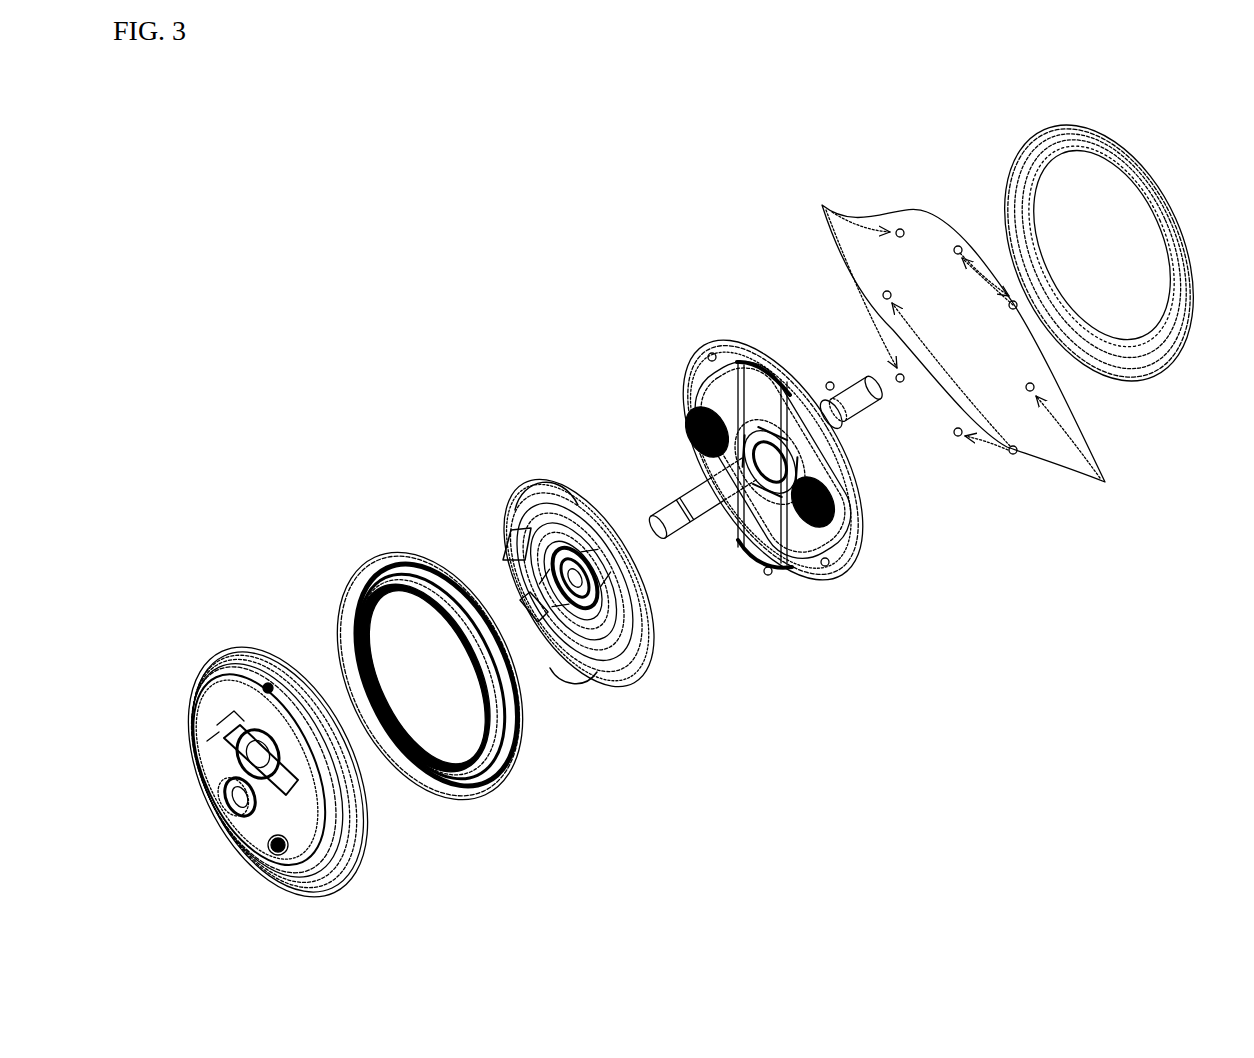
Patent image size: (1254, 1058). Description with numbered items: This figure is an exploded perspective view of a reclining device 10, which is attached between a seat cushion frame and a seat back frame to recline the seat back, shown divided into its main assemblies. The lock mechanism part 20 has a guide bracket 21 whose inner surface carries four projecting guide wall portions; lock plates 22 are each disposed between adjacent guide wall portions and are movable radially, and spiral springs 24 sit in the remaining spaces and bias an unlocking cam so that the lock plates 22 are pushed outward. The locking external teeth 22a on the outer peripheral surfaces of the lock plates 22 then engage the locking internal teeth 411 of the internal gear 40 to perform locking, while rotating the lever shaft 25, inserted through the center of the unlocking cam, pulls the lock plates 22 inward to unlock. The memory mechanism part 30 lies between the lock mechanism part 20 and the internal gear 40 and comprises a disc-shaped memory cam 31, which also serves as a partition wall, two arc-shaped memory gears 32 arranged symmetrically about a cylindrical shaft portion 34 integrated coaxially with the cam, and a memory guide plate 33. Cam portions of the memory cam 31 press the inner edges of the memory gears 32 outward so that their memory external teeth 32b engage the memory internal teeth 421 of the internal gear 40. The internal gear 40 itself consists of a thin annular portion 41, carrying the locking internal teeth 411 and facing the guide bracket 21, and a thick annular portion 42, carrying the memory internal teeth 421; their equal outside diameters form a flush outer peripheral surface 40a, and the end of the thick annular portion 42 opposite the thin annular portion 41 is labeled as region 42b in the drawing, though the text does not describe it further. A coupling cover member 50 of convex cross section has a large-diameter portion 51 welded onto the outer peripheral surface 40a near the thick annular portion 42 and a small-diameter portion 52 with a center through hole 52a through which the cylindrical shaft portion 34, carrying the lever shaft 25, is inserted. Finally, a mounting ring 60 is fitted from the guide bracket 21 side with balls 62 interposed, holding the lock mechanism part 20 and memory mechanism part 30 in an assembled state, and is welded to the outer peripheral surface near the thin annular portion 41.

The reclining device 10 is at (918, 718).
The lock mechanism part 20 is at (850, 575).
The guide bracket 21 is at (742, 345).
The lock plate 22 is at (778, 382).
The locking external teeth 22a is at (757, 366).
The spiral spring 24 is at (690, 428).
The lever shaft 25 is at (668, 540).
The memory mechanism part 30 is at (662, 688).
The memory cam 31 is at (598, 455).
The memory gear 32 is at (590, 515).
The memory external teeth 32b is at (545, 490).
The memory guide plate 33 is at (510, 510).
The cylindrical shaft portion 34 is at (525, 650).
The internal gear 40 is at (520, 783).
The outer peripheral surface 40a is at (400, 548).
The thin annular portion 41 is at (445, 568).
The locking internal teeth 411 is at (420, 558).
The thick annular portion 42 is at (480, 790).
The memory internal teeth 421 is at (448, 620).
The inner ring edge 42b is at (345, 590).
The coupling cover member 50 is at (368, 880).
The large-diameter portion 51 is at (320, 890).
The small-diameter portion 52 is at (200, 700).
The center through hole 52a is at (228, 812).
The mounting ring 60 is at (1178, 352).
The ball 62 is at (968, 346).